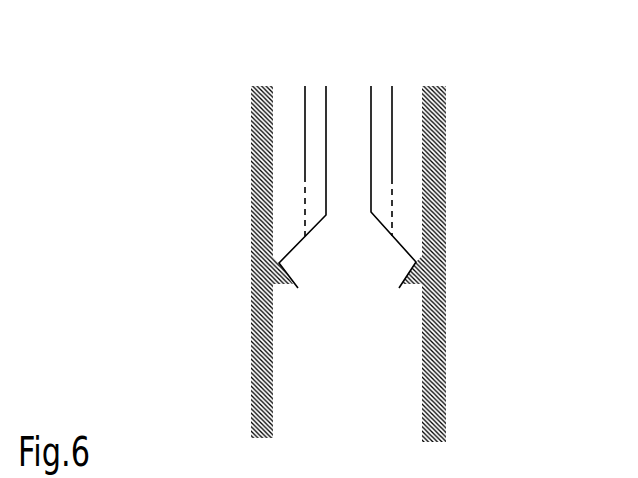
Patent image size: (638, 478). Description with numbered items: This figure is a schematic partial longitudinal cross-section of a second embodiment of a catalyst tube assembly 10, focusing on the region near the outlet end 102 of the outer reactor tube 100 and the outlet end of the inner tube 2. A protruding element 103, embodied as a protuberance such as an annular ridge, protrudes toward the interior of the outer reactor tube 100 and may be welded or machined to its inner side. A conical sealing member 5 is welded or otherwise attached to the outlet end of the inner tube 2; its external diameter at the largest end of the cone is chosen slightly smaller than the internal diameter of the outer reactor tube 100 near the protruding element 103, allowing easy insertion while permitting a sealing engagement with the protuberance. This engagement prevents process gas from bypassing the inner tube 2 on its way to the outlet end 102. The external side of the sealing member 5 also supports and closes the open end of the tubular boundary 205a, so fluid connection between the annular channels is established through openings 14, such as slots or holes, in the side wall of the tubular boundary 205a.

The catalyst tube assembly 10 is at (414, 72).
The outer reactor tube 100 is at (249, 247).
The protruding element 103 is at (420, 270).
The outlet end of the outer reactor tube 102 is at (378, 433).
The inner tube 2 is at (374, 176).
The tubular boundary 205a is at (393, 146).
The openings 14 is at (393, 211).
The sealing member 5 is at (402, 247).